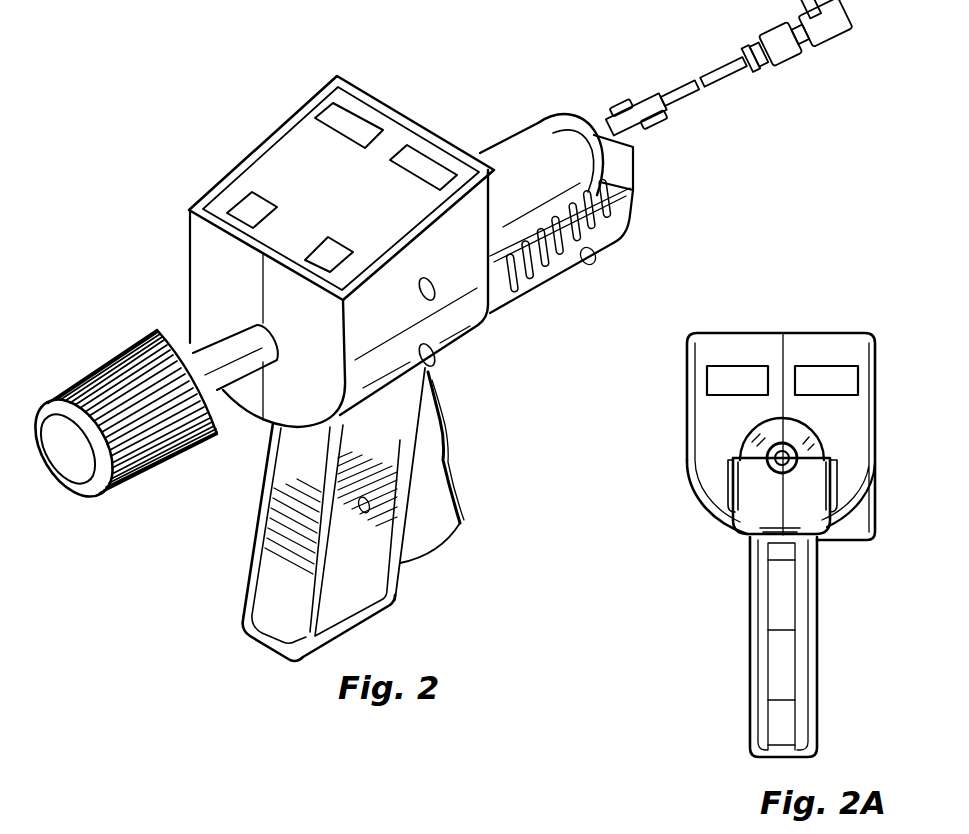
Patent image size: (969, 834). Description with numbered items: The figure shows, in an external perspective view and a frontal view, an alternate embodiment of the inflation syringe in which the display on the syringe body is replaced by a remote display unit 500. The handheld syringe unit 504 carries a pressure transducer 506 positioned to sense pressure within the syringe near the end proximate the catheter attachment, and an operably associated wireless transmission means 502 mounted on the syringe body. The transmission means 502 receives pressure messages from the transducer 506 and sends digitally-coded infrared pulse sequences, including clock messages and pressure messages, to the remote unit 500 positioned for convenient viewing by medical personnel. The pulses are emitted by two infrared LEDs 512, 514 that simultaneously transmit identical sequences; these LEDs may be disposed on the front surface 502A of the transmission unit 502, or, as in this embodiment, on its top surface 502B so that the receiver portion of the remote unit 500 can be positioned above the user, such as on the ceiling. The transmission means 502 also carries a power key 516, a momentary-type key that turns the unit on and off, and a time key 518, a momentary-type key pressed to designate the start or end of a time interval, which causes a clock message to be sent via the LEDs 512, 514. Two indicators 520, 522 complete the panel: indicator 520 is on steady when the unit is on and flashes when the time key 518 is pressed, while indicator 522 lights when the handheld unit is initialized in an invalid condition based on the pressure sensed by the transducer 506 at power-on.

In FIG. 2, the remote display unit 500 is at (452, 833).
In FIG. 2, the wireless transmission means 502 is at (417, 95).
In FIG. 2A, the front surface of transmission unit 502A is at (866, 425).
In FIG. 2, the top surface of transmission means 502B is at (347, 226).
In FIG. 2, the handheld syringe unit 504 is at (455, 377).
In FIG. 2A, the handheld syringe unit 504 is at (716, 534).
In FIG. 2, the pressure transducer 506 is at (632, 172).
In FIG. 2A, the I/R LED 512 is at (723, 367).
In FIG. 2A, the I/R LED 514 is at (831, 367).
In FIG. 2, the power key 516 is at (338, 248).
In FIG. 2, the time key 518 is at (243, 207).
In FIG. 2, the indicator 520 is at (330, 115).
In FIG. 2, the indicator 522 is at (410, 165).